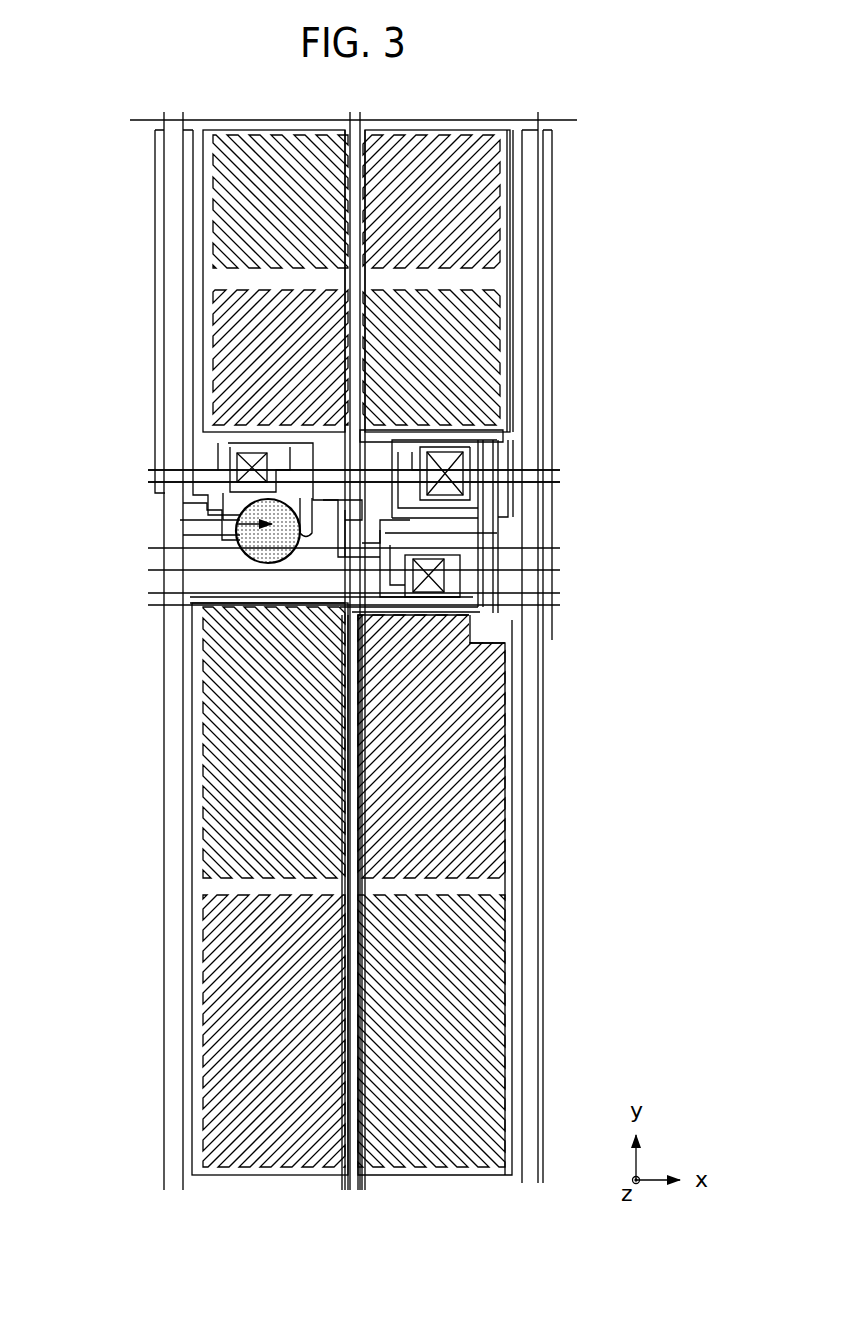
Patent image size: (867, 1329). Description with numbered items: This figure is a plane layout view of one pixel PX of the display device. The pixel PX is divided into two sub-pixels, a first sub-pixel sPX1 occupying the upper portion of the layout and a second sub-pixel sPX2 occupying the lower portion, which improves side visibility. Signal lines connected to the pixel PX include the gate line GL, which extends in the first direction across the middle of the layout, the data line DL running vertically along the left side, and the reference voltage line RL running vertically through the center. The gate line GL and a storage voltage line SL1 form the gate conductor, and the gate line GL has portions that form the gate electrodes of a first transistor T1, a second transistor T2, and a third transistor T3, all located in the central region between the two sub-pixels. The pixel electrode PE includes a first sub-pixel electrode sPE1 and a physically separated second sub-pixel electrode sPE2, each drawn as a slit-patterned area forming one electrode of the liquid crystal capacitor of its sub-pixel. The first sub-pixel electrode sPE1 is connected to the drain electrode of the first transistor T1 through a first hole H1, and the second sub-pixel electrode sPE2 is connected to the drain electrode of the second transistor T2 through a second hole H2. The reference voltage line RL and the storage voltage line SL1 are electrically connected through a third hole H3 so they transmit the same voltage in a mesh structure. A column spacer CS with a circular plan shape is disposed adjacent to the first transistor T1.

The data line DL is at (183, 110).
The reference voltage line RL is at (360, 110).
The first sub-pixel electrode sPE1 is at (218, 279).
The second sub-pixel electrode sPE2 is at (218, 891).
The first sub-pixel sPX1 is at (590, 130).
The second sub-pixel sPX2 is at (590, 632).
The pixel PX is at (681, 750).
The pixel electrode PE is at (681, 840).
The first transistor T1 is at (237, 524).
The second transistor T2 is at (288, 502).
The third transistor T3 is at (372, 475).
The first hole H1 is at (237, 463).
The second hole H2 is at (445, 557).
The third hole H3 is at (470, 462).
The storage voltage line SL1 is at (560, 465).
The gate line GL is at (560, 543).
The column spacer CS is at (335, 540).